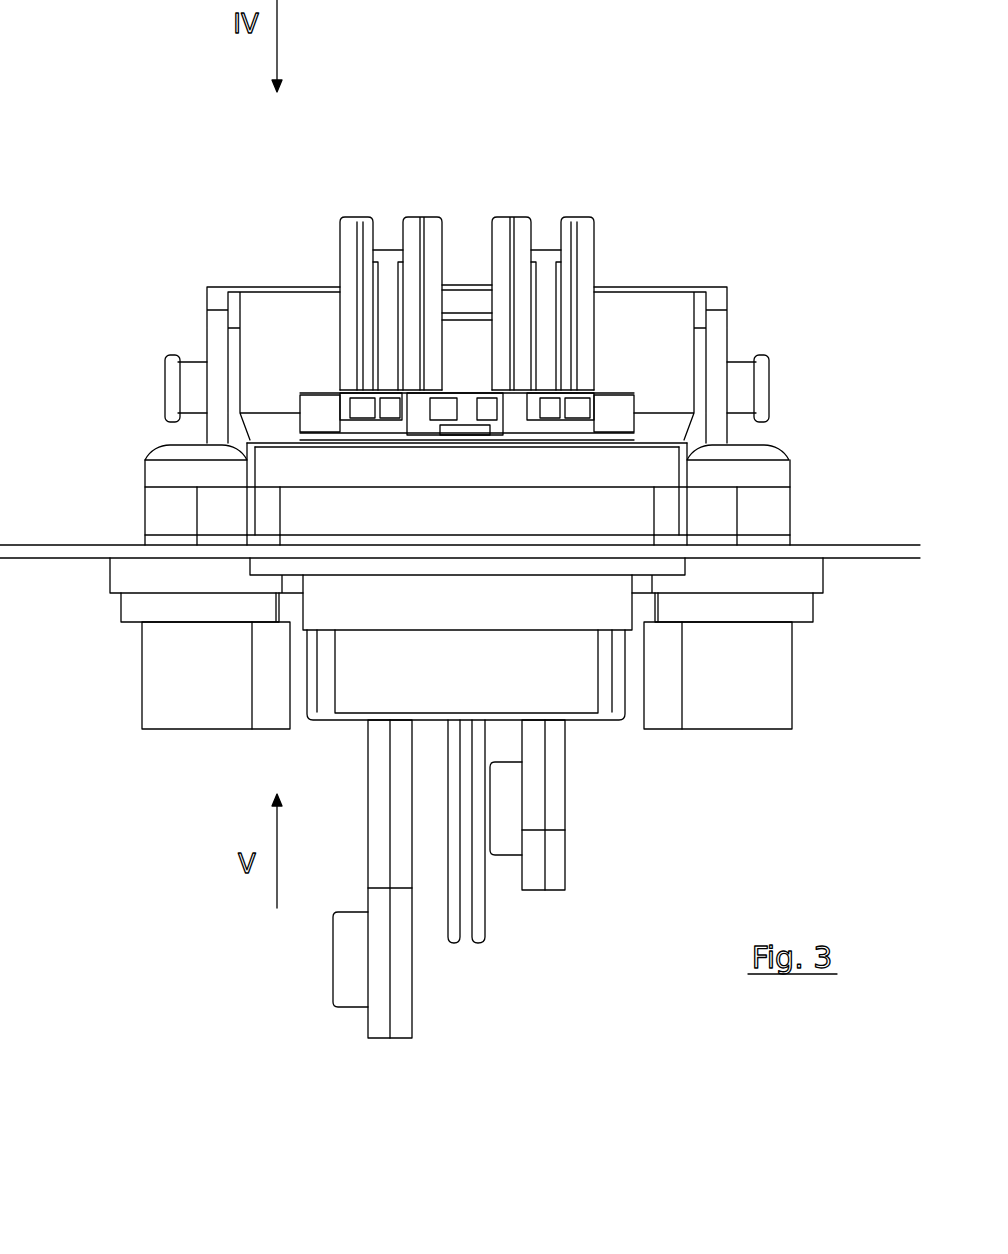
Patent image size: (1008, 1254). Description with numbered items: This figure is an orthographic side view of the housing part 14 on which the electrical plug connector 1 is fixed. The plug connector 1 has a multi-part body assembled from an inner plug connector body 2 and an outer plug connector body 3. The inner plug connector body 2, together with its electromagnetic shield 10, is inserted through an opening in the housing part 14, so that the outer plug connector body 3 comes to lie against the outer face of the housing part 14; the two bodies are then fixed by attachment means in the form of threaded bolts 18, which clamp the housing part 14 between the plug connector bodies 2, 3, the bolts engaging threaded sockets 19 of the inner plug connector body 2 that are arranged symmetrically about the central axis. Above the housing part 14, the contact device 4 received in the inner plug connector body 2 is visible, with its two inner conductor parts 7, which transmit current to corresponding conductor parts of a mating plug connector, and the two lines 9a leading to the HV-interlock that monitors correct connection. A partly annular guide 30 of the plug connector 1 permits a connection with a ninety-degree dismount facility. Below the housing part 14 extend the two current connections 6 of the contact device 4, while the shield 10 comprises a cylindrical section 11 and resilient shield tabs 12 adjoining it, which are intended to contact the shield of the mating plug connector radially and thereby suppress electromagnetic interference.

The electrical plug connector 1 is at (778, 267).
The inner plug connector body 2 is at (122, 678).
The outer plug connector body 3 is at (788, 404).
The contact device 4 is at (322, 272).
The current connections 6 is at (550, 890).
The inner conductor parts 7 is at (350, 230).
The lines 9a is at (485, 945).
The electromagnetic shield 10 is at (303, 733).
The cylindrical section 11 is at (350, 622).
The shield tabs 12 is at (303, 413).
The housing part 14 is at (868, 545).
The threaded bolts 18 is at (157, 478).
The threaded sockets 19 is at (193, 712).
The guide 30 is at (647, 307).